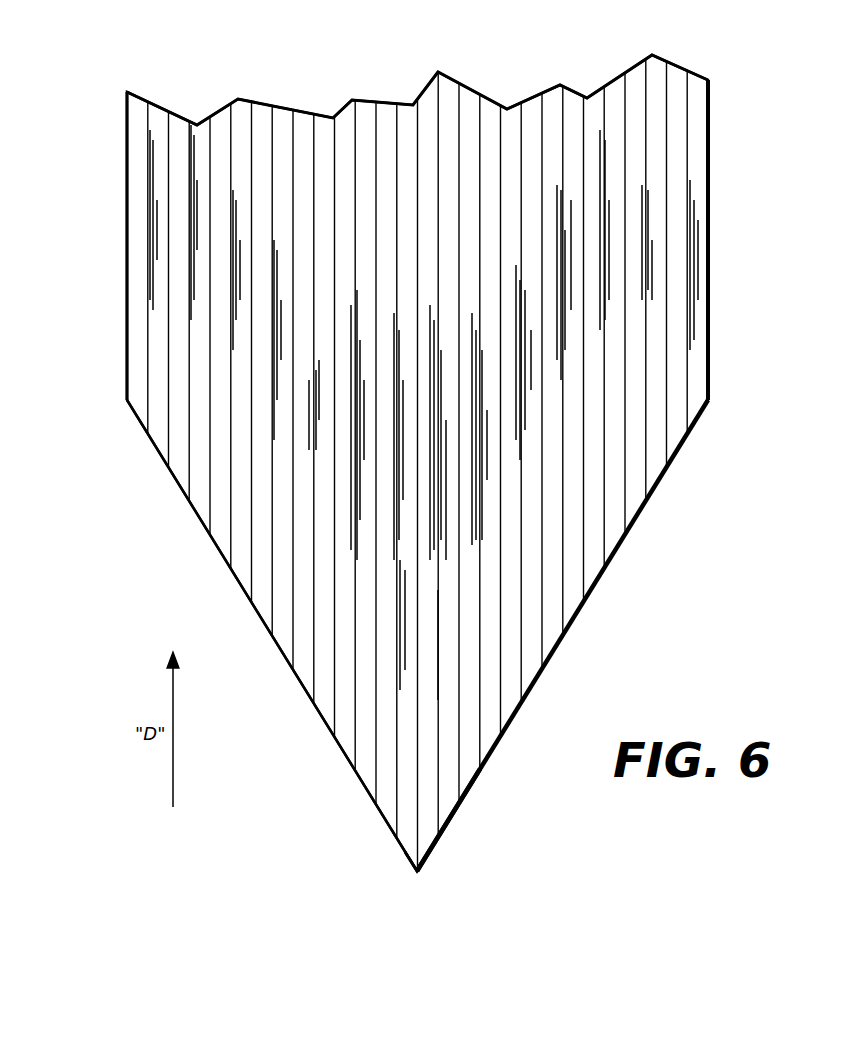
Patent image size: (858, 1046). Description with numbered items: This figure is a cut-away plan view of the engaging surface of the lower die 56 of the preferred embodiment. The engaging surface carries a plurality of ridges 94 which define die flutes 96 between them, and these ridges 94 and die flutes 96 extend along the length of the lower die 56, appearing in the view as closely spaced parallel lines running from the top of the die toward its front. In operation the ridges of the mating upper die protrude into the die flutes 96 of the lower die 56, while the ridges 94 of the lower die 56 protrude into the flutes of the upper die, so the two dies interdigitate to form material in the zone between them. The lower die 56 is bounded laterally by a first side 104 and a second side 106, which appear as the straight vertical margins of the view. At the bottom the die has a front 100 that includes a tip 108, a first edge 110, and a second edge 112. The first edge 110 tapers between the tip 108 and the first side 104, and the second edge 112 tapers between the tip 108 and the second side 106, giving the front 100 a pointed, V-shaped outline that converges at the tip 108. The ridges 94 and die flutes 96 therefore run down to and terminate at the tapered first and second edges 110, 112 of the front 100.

The lower die 56 is at (736, 186).
The ridges 94 is at (150, 121).
The die flutes 96 is at (209, 123).
The front 100 is at (448, 830).
The first side 104 is at (127, 352).
The second side 106 is at (710, 280).
The tip 108 is at (417, 873).
The first edge 110 is at (301, 683).
The second edge 112 is at (615, 552).